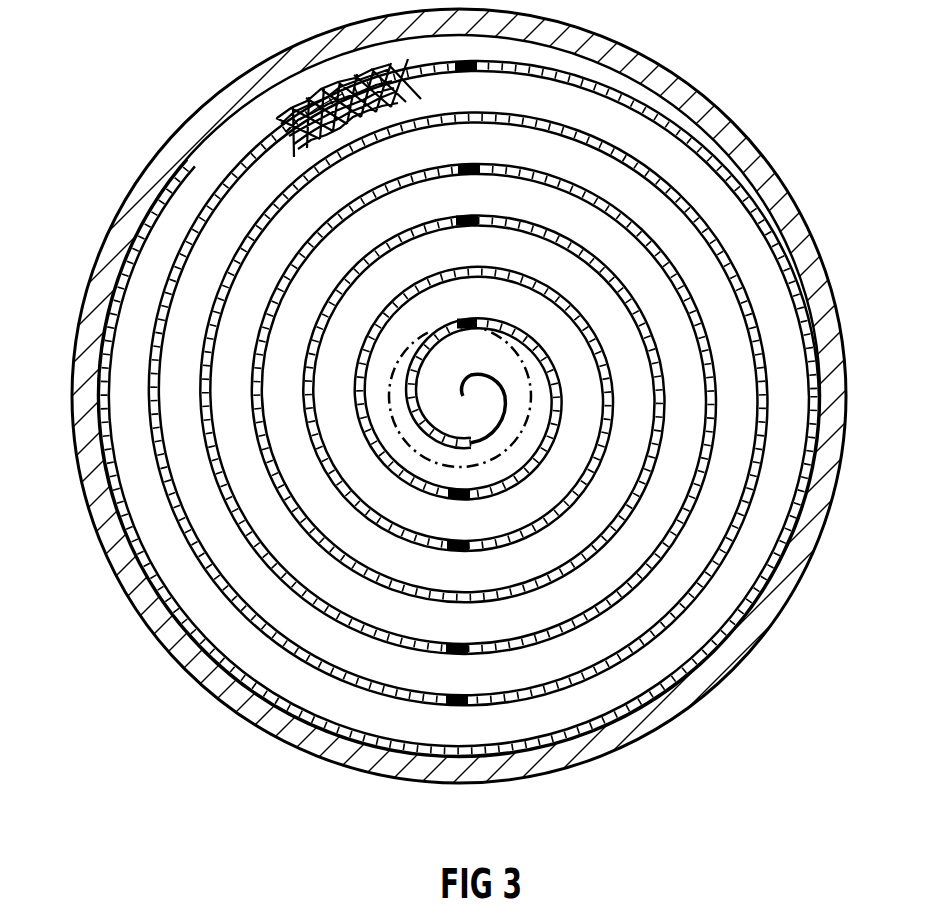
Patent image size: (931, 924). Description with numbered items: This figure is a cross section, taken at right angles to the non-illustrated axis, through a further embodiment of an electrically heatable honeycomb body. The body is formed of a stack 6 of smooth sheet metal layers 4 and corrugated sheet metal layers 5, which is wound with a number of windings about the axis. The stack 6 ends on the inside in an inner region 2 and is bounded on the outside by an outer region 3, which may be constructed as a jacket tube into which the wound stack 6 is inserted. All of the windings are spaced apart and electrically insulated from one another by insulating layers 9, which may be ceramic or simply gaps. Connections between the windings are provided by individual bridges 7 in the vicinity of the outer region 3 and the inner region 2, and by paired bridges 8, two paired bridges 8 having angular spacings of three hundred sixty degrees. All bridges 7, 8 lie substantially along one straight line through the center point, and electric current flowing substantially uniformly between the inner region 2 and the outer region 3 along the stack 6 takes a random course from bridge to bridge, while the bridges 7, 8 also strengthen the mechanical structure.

The inner region 2 is at (531, 416).
The outer region 3 is at (228, 702).
The smooth sheet metal layers 4 is at (320, 108).
The corrugated sheet metal layers 5 is at (292, 128).
The stack 6 is at (257, 523).
The bridges 7 is at (467, 72).
The paired bridges 8 is at (470, 173).
The insulating layers 9 is at (617, 703).